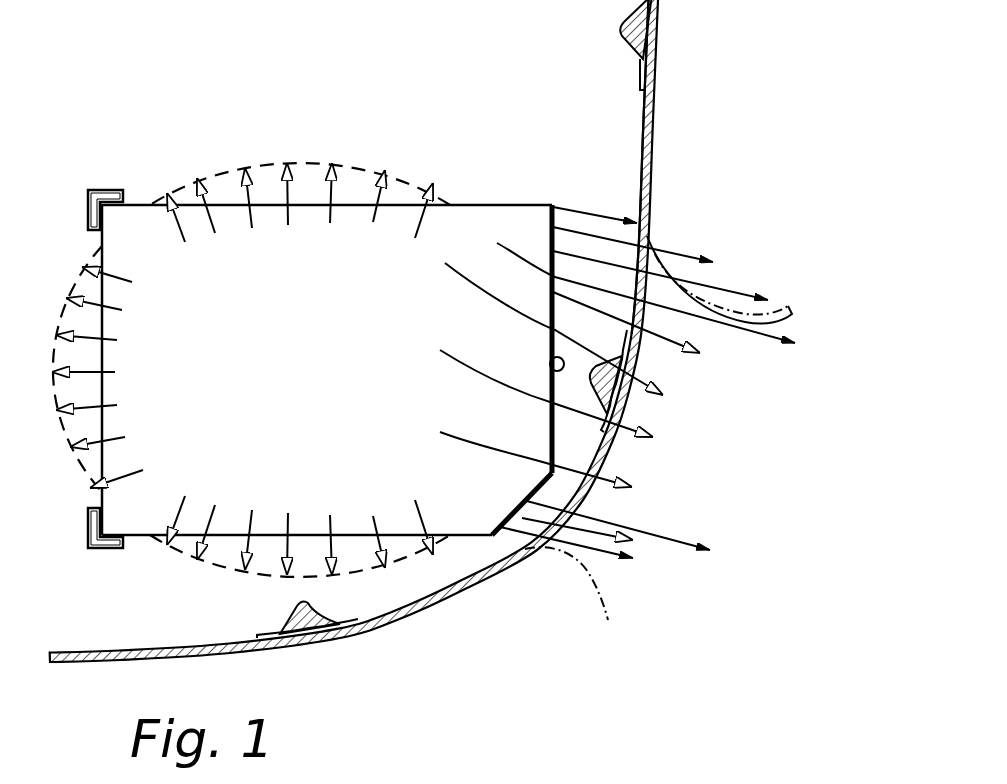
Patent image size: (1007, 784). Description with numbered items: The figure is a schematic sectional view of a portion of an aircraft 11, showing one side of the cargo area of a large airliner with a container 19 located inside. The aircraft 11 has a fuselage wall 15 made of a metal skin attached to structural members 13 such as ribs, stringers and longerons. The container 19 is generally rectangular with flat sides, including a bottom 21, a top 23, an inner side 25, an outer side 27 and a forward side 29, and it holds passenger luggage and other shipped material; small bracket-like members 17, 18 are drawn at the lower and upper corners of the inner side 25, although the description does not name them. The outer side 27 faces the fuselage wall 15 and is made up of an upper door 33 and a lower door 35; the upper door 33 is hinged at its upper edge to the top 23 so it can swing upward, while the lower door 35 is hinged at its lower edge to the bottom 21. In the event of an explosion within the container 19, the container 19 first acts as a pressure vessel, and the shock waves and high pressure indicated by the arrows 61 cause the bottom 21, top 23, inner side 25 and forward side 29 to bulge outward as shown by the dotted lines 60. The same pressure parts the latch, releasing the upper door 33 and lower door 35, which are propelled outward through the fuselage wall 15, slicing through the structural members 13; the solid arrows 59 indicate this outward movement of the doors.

The aircraft 11 is at (664, 50).
The structural members 13 is at (626, 40).
The fuselage wall 15 is at (650, 142).
The lower retaining bracket 17 is at (86, 546).
The upper retaining bracket 18 is at (97, 193).
The container 19 is at (237, 498).
The bottom 21 is at (272, 537).
The top 23 is at (353, 203).
The inner side 25 is at (92, 357).
The outer side 27 is at (553, 206).
The forward side 29 is at (346, 467).
The upper door 33 is at (550, 362).
The lower door 35 is at (545, 491).
The solid arrows 59 is at (684, 255).
The dotted lines 60 is at (222, 145).
The arrows 61 is at (666, 393).